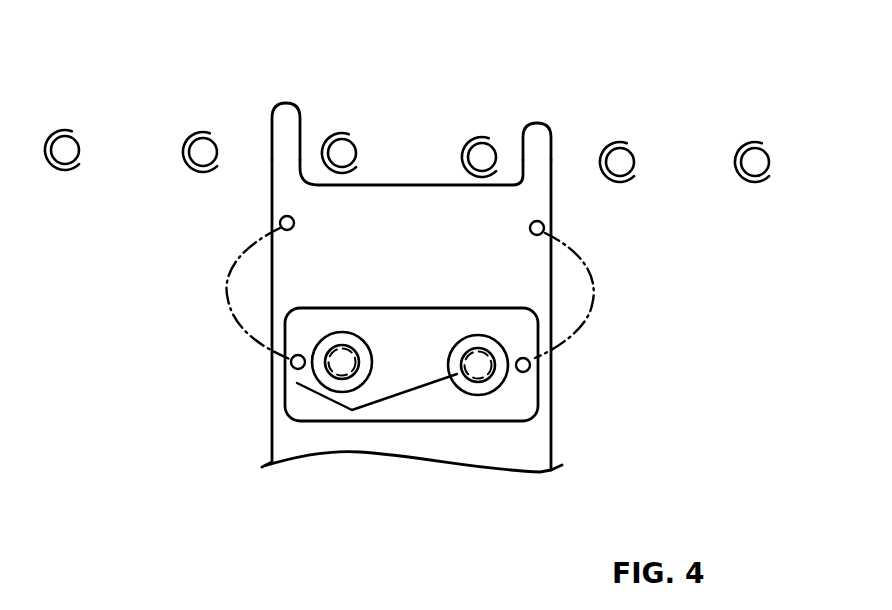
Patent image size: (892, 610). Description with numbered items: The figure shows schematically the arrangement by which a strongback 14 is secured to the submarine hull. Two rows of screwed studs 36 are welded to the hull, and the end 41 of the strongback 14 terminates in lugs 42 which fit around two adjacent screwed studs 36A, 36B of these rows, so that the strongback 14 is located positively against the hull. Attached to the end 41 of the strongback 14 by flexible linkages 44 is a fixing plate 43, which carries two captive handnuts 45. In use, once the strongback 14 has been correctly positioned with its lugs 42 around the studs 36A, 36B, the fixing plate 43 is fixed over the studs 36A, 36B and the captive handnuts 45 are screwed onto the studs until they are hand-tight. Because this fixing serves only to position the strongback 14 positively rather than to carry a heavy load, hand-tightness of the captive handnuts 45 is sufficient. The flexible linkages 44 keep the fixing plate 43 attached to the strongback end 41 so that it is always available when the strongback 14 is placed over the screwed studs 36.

The strongback 14 is at (518, 443).
The screwed studs 36 is at (755, 162).
The screwed stud 36A is at (342, 152).
The screwed stud 36B is at (484, 157).
The end of strongback 41 is at (523, 283).
The lugs 42 is at (288, 125).
The fixing plate 43 is at (517, 403).
The flexible linkages 44 is at (232, 316).
The captive handnuts 45 is at (323, 378).